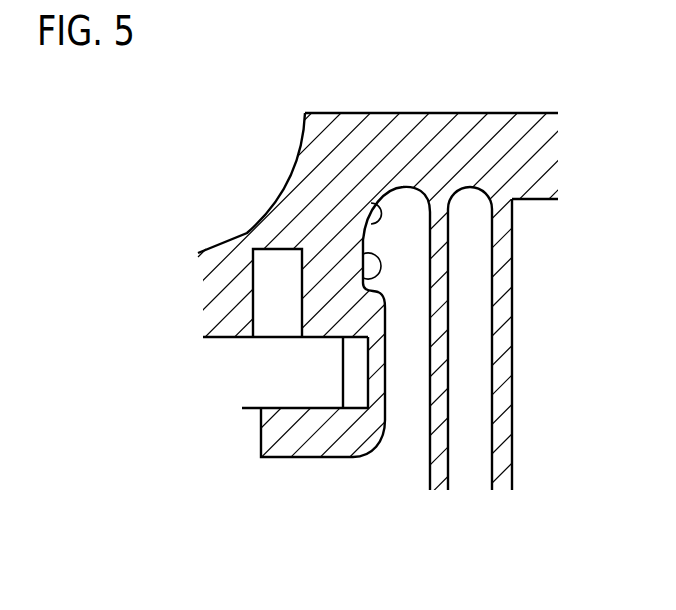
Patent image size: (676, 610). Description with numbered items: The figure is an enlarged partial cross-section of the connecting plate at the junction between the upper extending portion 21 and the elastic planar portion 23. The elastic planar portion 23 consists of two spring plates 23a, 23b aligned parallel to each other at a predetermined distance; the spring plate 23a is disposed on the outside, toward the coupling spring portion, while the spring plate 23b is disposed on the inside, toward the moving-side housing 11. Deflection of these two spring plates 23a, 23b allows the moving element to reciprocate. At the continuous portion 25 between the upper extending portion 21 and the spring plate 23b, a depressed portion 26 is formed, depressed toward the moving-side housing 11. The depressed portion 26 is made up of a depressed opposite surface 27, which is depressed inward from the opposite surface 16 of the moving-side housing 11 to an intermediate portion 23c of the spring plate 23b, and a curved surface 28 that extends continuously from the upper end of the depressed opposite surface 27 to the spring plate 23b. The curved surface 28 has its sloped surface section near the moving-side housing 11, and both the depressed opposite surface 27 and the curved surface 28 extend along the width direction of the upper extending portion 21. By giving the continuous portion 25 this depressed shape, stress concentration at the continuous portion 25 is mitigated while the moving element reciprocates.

The moving-side housing 11 is at (222, 247).
The opposite surface 16 is at (387, 378).
The upper extending portion 21 is at (388, 110).
The elastic planar portion 23 is at (516, 396).
The spring plate 23a is at (512, 463).
The spring plate 23b is at (468, 382).
The intermediate portion 23c is at (441, 374).
The continuous portion 25 is at (398, 180).
The depressed portion 26 is at (411, 260).
The depressed opposite surface 27 is at (378, 283).
The curved surface 28 is at (376, 218).